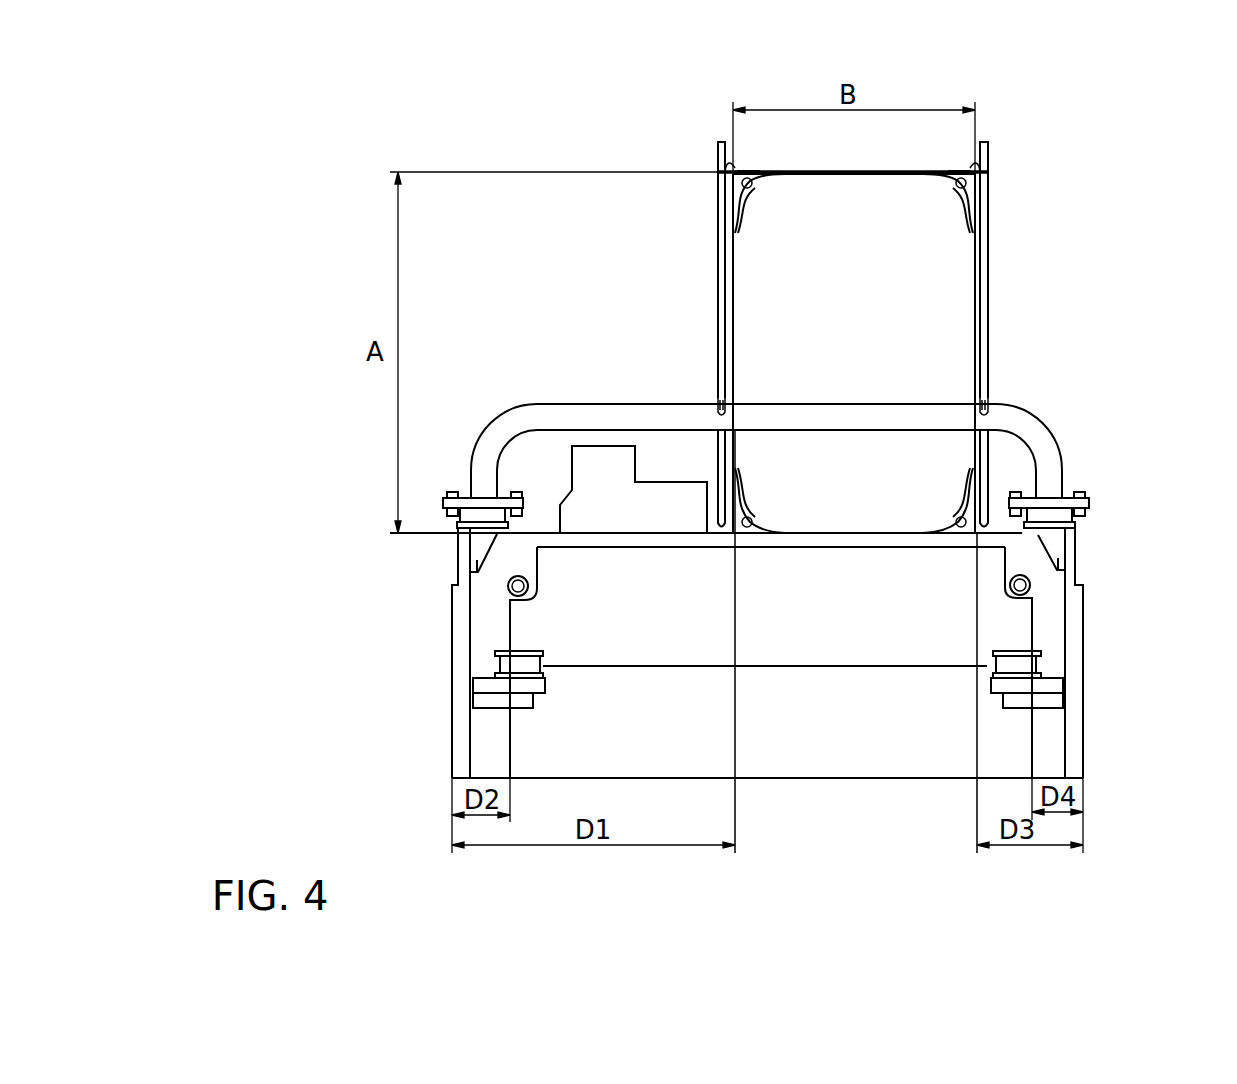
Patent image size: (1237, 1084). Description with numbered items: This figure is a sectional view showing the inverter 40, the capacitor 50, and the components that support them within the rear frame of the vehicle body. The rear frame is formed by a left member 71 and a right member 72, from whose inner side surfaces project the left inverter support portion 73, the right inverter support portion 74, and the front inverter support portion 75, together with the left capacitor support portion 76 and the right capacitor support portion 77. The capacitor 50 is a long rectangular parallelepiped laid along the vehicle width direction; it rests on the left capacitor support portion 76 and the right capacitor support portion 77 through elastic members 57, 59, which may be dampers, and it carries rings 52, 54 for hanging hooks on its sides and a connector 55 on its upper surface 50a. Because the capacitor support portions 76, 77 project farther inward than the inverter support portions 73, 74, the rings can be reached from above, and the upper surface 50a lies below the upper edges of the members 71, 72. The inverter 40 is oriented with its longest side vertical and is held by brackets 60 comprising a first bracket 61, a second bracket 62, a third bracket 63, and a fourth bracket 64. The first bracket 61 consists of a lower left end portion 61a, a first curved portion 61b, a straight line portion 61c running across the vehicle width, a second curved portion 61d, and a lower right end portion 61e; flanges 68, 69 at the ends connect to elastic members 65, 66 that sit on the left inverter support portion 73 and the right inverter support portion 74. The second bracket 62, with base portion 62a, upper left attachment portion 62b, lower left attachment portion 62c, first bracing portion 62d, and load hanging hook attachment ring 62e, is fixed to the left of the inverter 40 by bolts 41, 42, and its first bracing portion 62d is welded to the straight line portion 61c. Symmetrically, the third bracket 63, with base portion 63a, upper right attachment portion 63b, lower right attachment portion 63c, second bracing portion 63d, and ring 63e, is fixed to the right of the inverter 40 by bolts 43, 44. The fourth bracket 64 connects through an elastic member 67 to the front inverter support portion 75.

The inverter 40 is at (897, 490).
The bolt 41 is at (767, 177).
The bolt 42 is at (765, 525).
The bolt 43 is at (957, 178).
The bolt 44 is at (945, 525).
The capacitor 50 is at (767, 563).
The upper surface of the capacitor 50a is at (805, 547).
The ring 52 is at (507, 587).
The ring 54 is at (1032, 588).
The connector 55 is at (598, 460).
The elastic member 57 is at (497, 665).
The elastic member 59 is at (1041, 665).
The brackets 60 is at (744, 481).
The first bracket 61 is at (743, 402).
The lower left end portion 61a is at (482, 492).
The first curved portion 61b is at (495, 418).
The straight line portion 61c is at (623, 415).
The second curved portion 61d is at (1033, 427).
The lower right end portion 61e is at (1052, 488).
The second bracket 62 is at (719, 474).
The base portion 62a is at (725, 193).
The upper left attachment portion 62b is at (733, 168).
The lower left attachment portion 62c is at (728, 527).
The first bracing portion 62d is at (722, 398).
The load hanging hook attachment ring 62e is at (718, 150).
The third bracket 63 is at (1004, 470).
The base portion 63a is at (988, 193).
The upper right attachment portion 63b is at (972, 170).
The lower right attachment portion 63c is at (968, 528).
The second bracing portion 63d is at (988, 398).
The load hanging hook attachment ring 63e is at (988, 150).
The fourth bracket 64 is at (1023, 453).
The elastic member 65 is at (477, 514).
The elastic member 66 is at (1060, 515).
The elastic member 67 is at (1017, 477).
The flange 68 is at (442, 500).
The flange 69 is at (1090, 498).
The left member 71 is at (452, 640).
The right member 72 is at (1083, 640).
The left inverter support portion 73 is at (477, 548).
The right inverter support portion 74 is at (1052, 532).
The front inverter support portion 75 is at (1037, 572).
The left capacitor support portion 76 is at (478, 686).
The right capacitor support portion 77 is at (1058, 688).